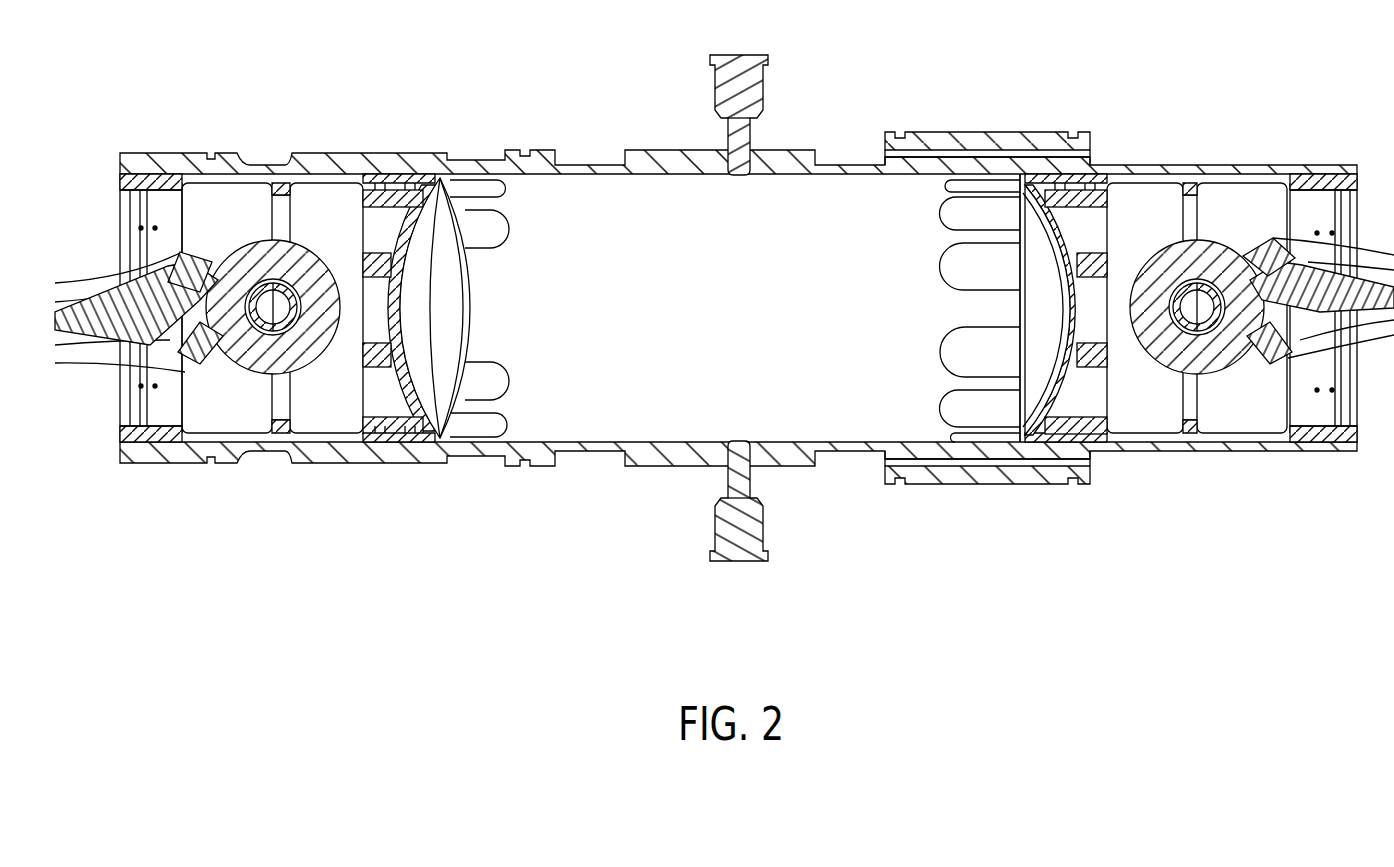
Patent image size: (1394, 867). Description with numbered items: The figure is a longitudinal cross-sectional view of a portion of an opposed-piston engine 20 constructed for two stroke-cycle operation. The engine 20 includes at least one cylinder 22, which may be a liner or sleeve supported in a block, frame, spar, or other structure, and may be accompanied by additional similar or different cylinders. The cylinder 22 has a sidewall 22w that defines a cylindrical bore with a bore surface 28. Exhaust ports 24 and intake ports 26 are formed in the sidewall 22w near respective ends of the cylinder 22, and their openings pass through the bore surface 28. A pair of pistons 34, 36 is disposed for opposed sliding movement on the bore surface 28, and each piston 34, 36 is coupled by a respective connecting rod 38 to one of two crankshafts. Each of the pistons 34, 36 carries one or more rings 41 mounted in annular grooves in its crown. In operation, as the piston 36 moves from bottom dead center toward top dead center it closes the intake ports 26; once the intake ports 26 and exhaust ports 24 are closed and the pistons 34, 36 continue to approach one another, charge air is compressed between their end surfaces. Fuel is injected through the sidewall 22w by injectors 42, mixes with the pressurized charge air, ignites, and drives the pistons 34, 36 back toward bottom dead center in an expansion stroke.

The opposed-piston engine 20 is at (724, 285).
The cylinder 22 is at (738, 348).
The sidewall 22w is at (855, 455).
The exhaust ports 24 is at (930, 347).
The intake ports 26 is at (506, 237).
The bore surface 28 is at (758, 359).
The piston 34 is at (1135, 405).
The piston 36 is at (644, 320).
The connecting rod 38 is at (92, 352).
The rings 41 is at (410, 178).
The injectors 42 is at (768, 80).